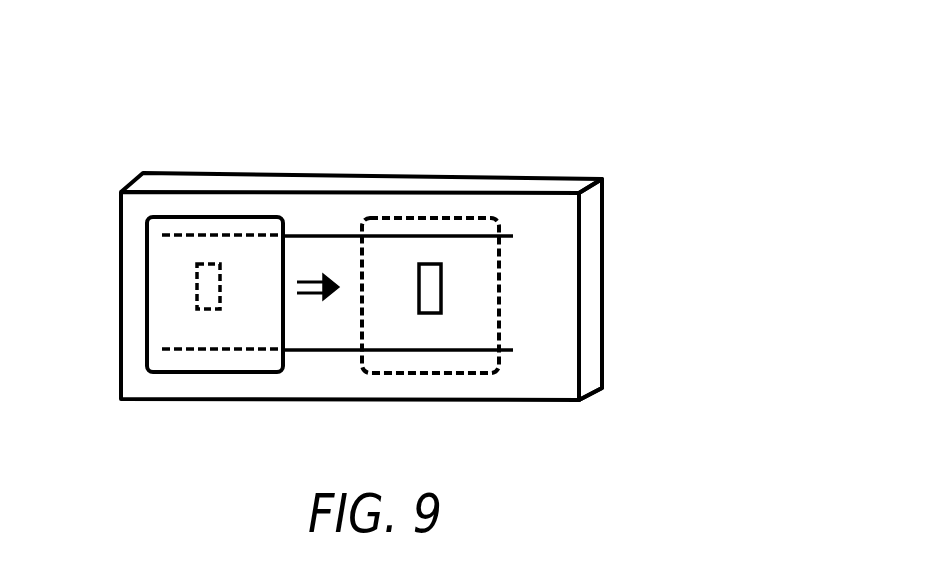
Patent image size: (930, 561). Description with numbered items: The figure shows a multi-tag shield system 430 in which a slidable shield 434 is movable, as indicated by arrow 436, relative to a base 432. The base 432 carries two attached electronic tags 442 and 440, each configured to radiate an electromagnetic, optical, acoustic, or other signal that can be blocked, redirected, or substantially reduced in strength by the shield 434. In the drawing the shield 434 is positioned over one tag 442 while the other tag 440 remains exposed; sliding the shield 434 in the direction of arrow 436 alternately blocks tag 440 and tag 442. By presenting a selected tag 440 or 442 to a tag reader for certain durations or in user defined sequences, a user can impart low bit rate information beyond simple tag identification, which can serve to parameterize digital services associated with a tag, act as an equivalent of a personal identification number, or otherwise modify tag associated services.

The multi-tag shield system 430 is at (619, 118).
The base 432 is at (588, 270).
The slidable shield 434 is at (165, 258).
The arrow 436 is at (312, 278).
The electronic tag 440 is at (428, 264).
The electronic tag 442 is at (210, 264).